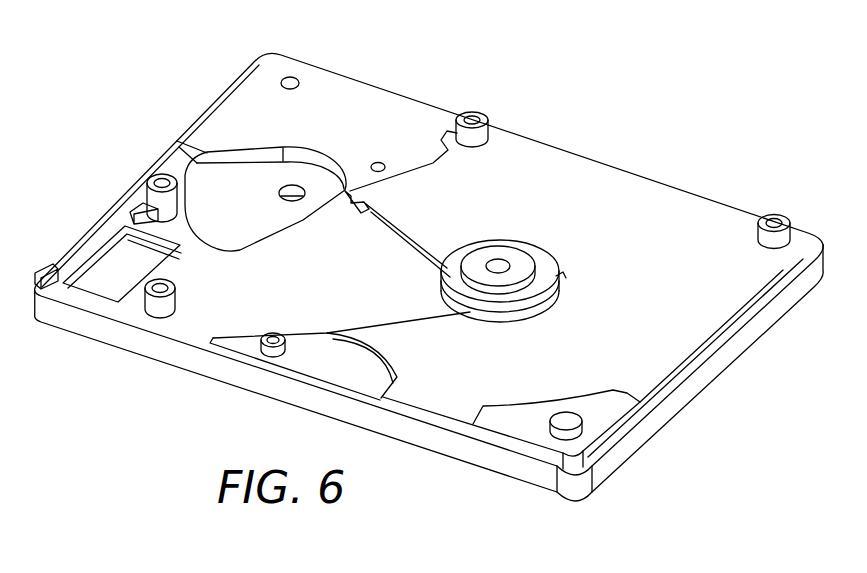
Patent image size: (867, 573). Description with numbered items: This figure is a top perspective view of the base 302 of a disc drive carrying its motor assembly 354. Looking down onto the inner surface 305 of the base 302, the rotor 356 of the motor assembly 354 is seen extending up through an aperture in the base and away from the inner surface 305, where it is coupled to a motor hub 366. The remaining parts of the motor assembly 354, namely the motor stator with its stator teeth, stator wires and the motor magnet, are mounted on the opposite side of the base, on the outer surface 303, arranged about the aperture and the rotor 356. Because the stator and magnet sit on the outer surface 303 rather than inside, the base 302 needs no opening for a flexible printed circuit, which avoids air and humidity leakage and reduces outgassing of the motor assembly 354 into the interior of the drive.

The base 302 is at (503, 127).
The outer surface 303 is at (502, 480).
The inner surface 305 is at (633, 217).
The motor assembly 354 is at (506, 210).
The rotor 356 is at (530, 308).
The motor hub 366 is at (475, 262).